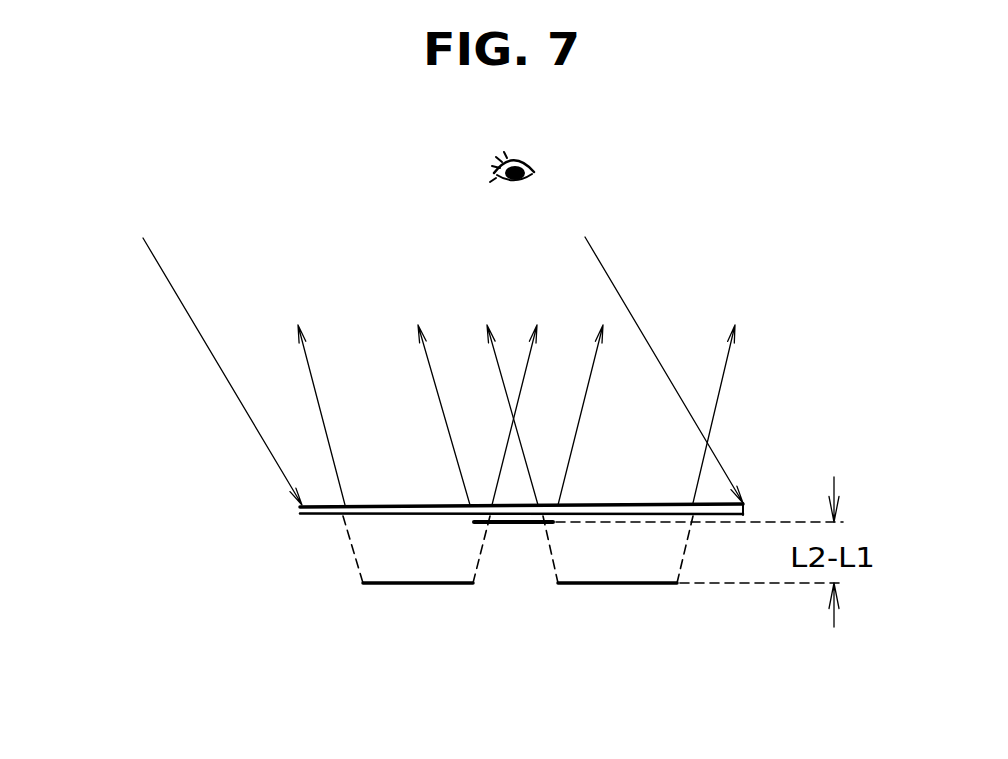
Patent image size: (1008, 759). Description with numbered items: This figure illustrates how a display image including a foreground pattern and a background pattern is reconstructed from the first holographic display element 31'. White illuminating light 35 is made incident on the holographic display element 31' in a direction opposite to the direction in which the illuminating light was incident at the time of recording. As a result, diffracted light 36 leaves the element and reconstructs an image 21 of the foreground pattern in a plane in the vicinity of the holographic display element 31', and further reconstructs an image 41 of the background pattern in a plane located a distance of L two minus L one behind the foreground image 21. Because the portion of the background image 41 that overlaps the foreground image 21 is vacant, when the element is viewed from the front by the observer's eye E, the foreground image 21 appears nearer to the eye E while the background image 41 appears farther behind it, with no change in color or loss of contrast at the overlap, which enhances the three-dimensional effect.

The white illuminating light 35 is at (219, 368).
The holographic display element 31' is at (474, 520).
The diffracted light 36 is at (610, 312).
The image of the foreground pattern 21 is at (512, 526).
The image of the background pattern 41 is at (417, 584).
The observer's eye E is at (536, 171).